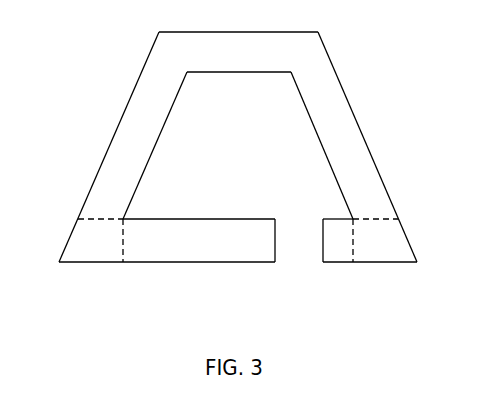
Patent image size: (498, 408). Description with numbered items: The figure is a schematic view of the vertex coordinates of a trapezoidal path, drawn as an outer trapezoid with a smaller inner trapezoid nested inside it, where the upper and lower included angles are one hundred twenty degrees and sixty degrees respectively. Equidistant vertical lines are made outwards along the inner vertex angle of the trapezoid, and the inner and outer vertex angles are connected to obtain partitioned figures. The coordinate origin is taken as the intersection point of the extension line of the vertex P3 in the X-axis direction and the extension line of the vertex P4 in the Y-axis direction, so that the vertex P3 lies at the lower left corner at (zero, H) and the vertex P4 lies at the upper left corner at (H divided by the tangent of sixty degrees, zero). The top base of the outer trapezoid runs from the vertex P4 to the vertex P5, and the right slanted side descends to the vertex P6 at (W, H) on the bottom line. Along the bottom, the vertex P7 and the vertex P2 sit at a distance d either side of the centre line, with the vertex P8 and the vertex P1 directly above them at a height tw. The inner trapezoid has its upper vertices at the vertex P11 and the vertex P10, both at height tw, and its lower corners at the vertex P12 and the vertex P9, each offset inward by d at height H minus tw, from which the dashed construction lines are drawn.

The vertex P1 is at (278, 226).
The vertex P2 is at (170, 278).
The vertex P3 is at (96, 165).
The vertex P4 is at (224, 32).
The vertex P5 is at (367, 143).
The vertex P6 is at (379, 269).
The vertex P7 is at (338, 257).
The vertex P8 is at (322, 167).
The vertex P9 is at (383, 195).
The vertex P10 is at (239, 88).
The vertex P11 is at (172, 145).
The vertex P12 is at (176, 223).